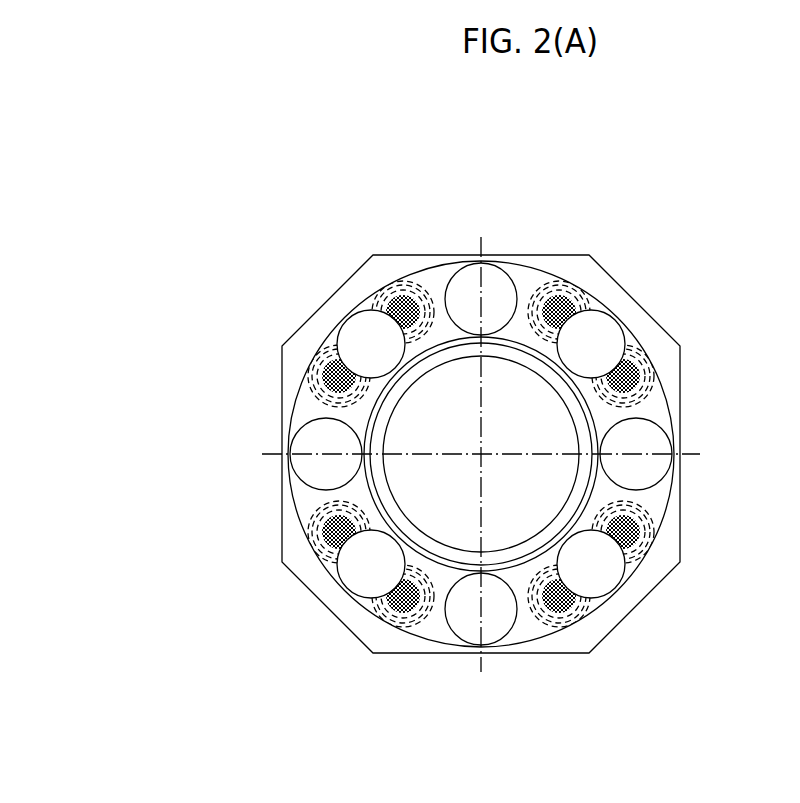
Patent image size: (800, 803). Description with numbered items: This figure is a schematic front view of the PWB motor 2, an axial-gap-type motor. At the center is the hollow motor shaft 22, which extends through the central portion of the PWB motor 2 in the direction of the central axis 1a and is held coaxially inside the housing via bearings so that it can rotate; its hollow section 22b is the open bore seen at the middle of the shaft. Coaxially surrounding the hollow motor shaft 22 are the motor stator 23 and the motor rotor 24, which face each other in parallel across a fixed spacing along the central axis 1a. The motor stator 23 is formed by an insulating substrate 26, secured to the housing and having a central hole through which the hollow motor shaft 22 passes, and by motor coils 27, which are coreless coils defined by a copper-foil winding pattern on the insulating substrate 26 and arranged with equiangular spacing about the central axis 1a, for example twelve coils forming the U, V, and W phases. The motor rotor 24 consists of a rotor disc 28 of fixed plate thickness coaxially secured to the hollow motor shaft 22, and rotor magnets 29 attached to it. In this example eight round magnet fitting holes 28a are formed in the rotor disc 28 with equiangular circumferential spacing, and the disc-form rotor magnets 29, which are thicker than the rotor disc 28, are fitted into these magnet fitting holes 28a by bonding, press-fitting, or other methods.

The PWB motor 2 is at (475, 424).
The hollow motor shaft 22 is at (513, 565).
The hollow section 22b is at (427, 427).
The central axis 1a is at (479, 460).
The motor stator 23 is at (481, 386).
The insulating substrate 26 is at (614, 272).
The motor coils 27 is at (658, 182).
The motor rotor 24 is at (547, 494).
The rotor disc 28 is at (645, 567).
The rotor magnets 29 is at (620, 598).
The magnet fitting holes 28a is at (598, 598).